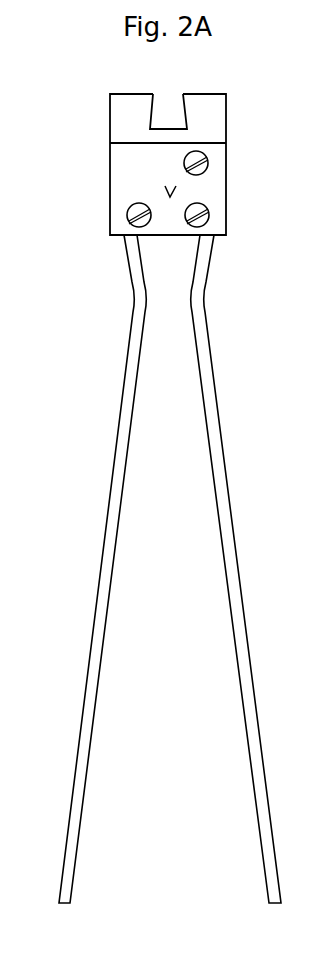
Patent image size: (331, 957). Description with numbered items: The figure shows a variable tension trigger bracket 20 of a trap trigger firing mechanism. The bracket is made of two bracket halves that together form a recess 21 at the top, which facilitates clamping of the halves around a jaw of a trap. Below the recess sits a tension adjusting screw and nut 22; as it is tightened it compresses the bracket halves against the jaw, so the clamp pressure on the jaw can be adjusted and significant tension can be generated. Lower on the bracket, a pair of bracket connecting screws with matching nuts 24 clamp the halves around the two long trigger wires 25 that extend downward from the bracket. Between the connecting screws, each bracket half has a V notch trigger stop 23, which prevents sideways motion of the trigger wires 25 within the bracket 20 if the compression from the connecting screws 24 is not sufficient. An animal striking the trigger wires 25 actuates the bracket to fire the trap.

The variable tension trigger bracket 20 is at (159, 498).
The recess 21 is at (226, 112).
The tension adjusting screw and nut 22 is at (208, 161).
The V notch trigger stop 23 is at (175, 192).
The bracket connecting screws with matching nuts 24 is at (208, 220).
The trigger wires 25 is at (209, 347).